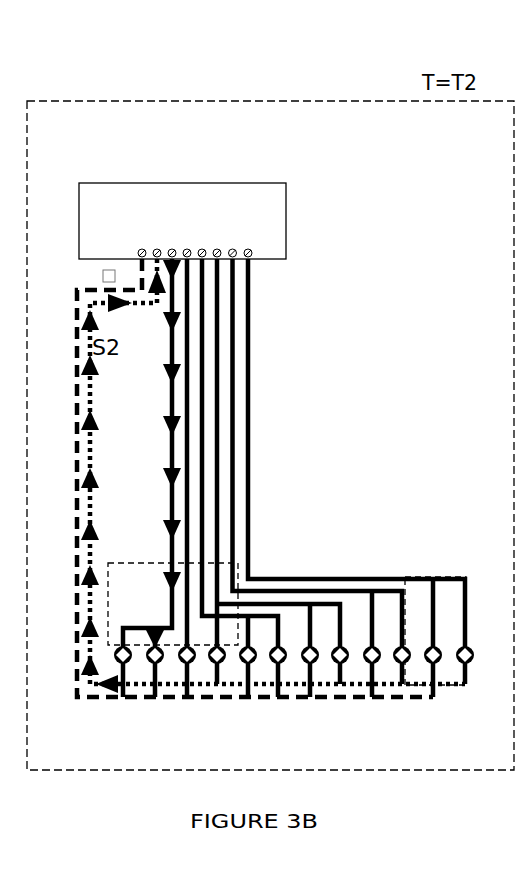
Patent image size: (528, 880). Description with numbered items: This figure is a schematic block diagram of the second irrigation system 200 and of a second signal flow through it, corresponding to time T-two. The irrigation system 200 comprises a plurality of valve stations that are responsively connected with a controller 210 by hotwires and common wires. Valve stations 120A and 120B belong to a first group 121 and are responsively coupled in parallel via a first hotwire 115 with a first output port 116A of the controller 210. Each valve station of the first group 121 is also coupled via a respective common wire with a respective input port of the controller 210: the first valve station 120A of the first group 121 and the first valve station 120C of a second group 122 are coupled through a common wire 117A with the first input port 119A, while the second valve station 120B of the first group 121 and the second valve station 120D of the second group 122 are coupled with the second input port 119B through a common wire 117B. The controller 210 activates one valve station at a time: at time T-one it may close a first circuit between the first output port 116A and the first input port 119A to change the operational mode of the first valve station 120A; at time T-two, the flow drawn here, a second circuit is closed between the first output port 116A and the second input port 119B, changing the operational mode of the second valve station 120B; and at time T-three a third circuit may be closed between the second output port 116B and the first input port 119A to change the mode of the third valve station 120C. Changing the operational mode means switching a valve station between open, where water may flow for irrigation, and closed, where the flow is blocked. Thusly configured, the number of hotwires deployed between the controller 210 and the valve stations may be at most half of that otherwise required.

The irrigation system 200 is at (150, 101).
The controller 210 is at (286, 220).
The first input port 119A is at (143, 249).
The second input port 119B is at (157, 249).
The first output port 116A is at (173, 249).
The second output port 116B is at (188, 249).
The common wire 117A is at (80, 288).
The common wire 117B is at (90, 427).
The first hotwire 115 is at (170, 403).
The second group 122 is at (240, 563).
The first group 121 is at (145, 562).
The first valve station 120A is at (125, 668).
The second valve station 120B is at (156, 668).
The first valve station of second group 120C is at (188, 668).
The second valve station of second group 120D is at (218, 668).